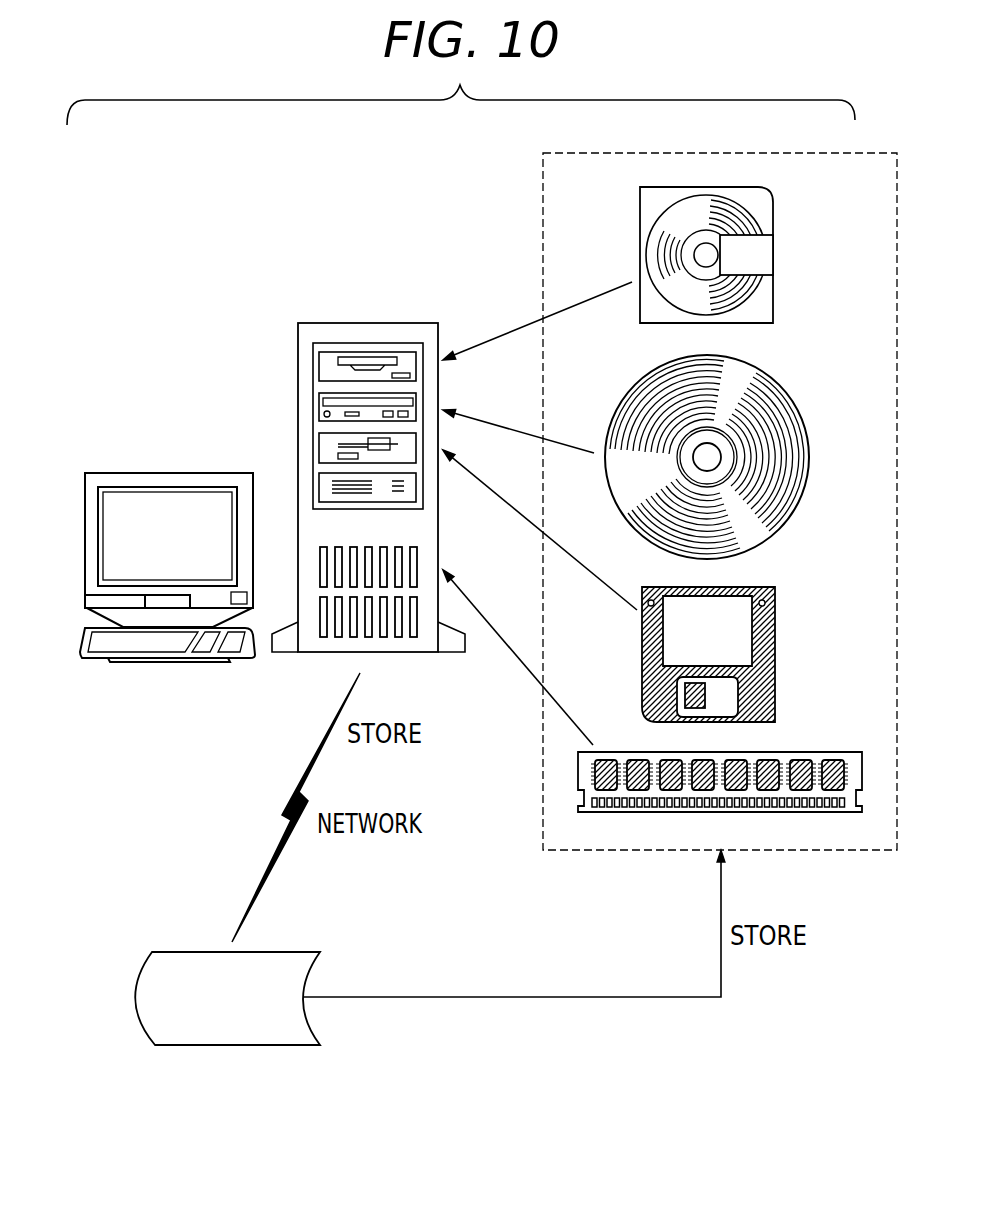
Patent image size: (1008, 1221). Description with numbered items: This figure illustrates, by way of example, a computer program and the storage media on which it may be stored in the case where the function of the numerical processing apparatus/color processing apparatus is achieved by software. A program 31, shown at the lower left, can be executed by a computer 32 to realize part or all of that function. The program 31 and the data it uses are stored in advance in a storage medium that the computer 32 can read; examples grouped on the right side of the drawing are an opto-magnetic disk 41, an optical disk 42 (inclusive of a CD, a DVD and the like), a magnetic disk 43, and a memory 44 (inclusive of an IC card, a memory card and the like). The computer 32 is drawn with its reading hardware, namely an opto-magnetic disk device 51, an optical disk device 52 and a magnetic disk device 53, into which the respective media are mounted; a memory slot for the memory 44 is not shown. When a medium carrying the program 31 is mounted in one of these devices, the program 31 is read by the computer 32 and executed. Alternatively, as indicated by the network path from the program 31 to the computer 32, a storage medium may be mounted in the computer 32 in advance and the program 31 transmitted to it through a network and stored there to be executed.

The program 31 is at (135, 1001).
The computer 32 is at (370, 323).
The opto-magnetic disk 41 is at (775, 219).
The optical disk 42 is at (812, 455).
The magnetic disk 43 is at (777, 652).
The memory 44 is at (806, 752).
The opto-magnetic disk device 51 is at (319, 370).
The optical disk device 52 is at (319, 411).
The magnetic disk device 53 is at (319, 451).